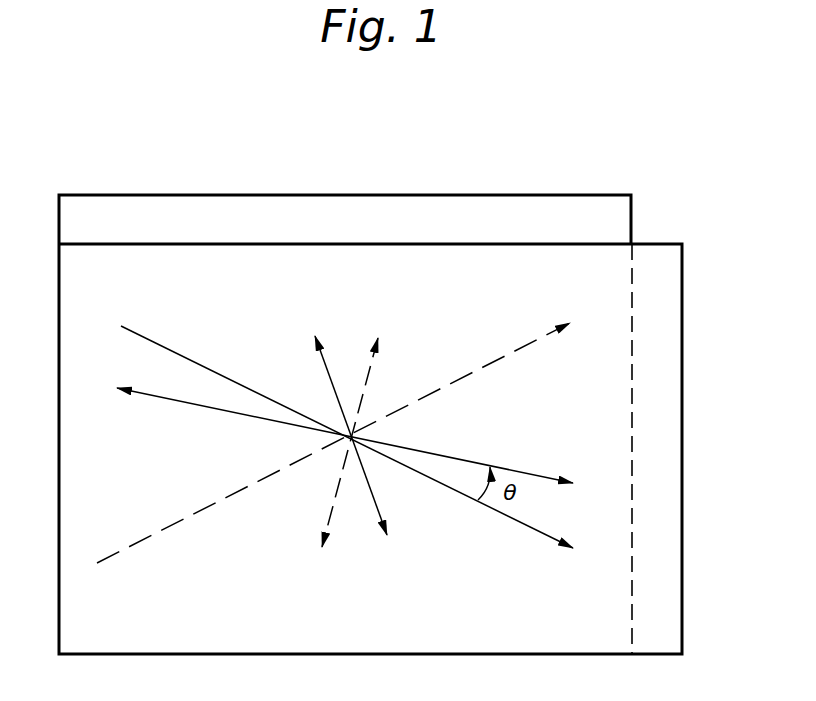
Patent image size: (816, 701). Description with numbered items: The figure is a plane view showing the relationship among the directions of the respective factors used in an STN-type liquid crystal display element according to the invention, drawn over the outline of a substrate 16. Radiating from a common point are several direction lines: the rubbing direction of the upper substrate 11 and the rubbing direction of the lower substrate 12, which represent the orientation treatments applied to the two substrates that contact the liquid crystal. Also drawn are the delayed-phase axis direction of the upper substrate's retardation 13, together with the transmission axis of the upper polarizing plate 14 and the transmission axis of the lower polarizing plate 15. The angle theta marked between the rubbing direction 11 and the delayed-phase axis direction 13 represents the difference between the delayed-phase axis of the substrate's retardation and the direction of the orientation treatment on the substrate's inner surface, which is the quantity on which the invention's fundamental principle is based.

The rubbing direction of upper substrate 11 is at (533, 530).
The rubbing direction of lower substrate 12 is at (485, 363).
The delayed-phase axis direction of upper substrate's retardation 13 is at (533, 473).
The transmission axis of upper polarizing plate 14 is at (372, 505).
The transmission axis of lower polarizing plate 15 is at (332, 505).
The substrate 16 is at (615, 202).